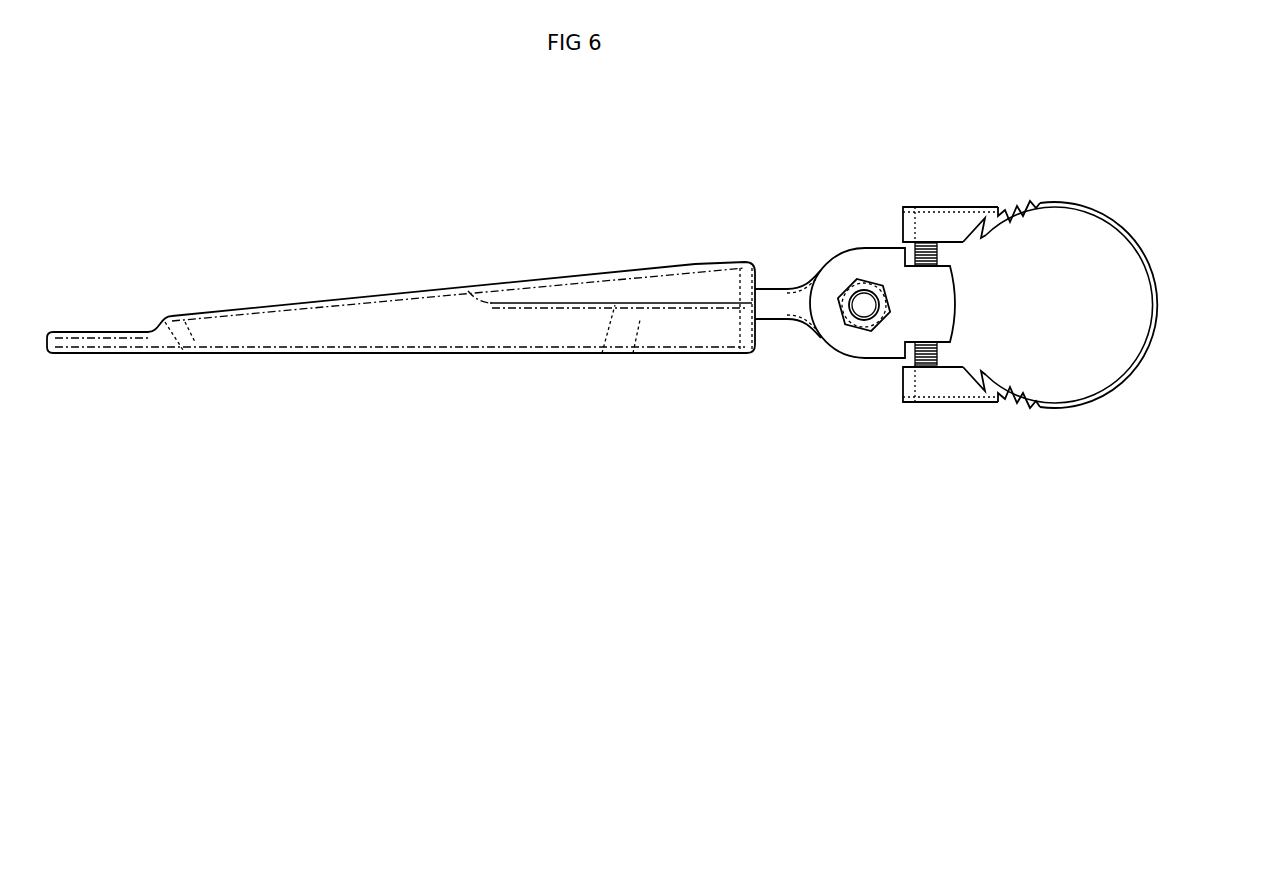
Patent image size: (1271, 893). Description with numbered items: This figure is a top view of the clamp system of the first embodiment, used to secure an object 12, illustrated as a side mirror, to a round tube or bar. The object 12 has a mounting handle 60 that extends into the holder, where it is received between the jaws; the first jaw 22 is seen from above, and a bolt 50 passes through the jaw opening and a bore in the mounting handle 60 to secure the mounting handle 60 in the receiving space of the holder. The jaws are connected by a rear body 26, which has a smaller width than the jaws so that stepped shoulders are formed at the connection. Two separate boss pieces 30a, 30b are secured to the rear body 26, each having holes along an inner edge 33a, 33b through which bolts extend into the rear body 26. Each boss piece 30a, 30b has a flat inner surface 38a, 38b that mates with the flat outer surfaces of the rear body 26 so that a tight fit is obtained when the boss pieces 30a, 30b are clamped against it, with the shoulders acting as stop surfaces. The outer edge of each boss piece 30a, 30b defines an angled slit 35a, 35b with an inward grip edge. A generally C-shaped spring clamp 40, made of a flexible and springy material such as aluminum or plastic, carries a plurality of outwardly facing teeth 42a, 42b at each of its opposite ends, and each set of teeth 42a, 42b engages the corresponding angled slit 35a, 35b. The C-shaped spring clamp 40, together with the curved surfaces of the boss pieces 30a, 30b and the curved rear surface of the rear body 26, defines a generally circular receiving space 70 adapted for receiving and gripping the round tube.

The object 12 is at (401, 272).
The first jaw 22 is at (868, 324).
The rear body 26 is at (973, 304).
The boss piece 30a is at (979, 204).
The boss piece 30b is at (991, 386).
The inner edge 33a is at (899, 188).
The inner edge 33b is at (910, 421).
The angled slit 35a is at (1003, 246).
The angled slit 35b is at (1004, 352).
The flat inner surface 38a is at (886, 215).
The flat inner surface 38b is at (891, 392).
The spring clamp 40 is at (1123, 305).
The teeth 42a is at (1078, 178).
The teeth 42b is at (1079, 423).
The bolt 50 is at (780, 215).
The mounting handle 60 is at (758, 341).
The circular receiving space 70 is at (1078, 311).